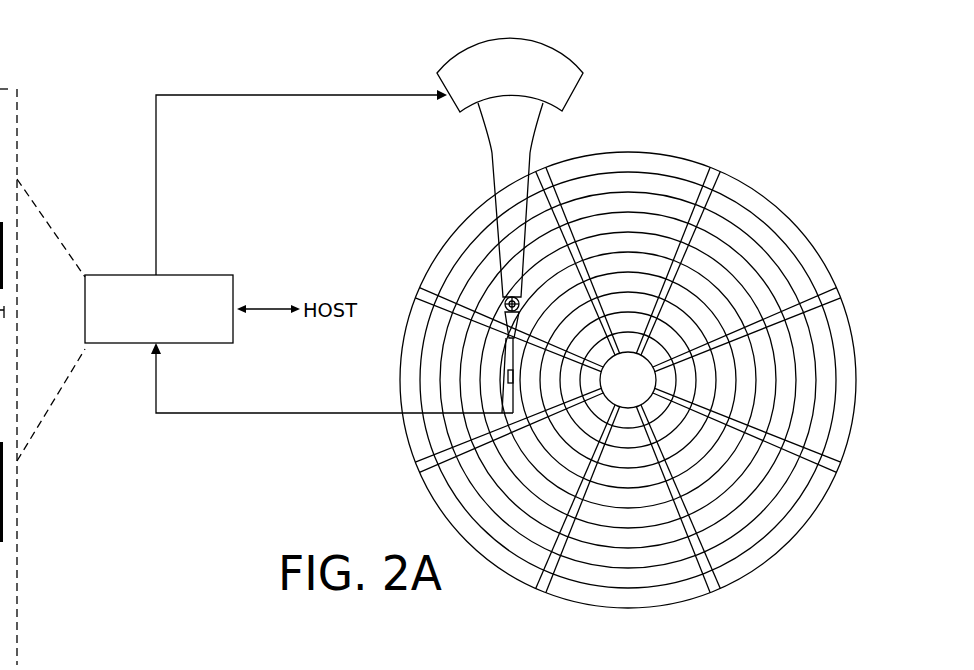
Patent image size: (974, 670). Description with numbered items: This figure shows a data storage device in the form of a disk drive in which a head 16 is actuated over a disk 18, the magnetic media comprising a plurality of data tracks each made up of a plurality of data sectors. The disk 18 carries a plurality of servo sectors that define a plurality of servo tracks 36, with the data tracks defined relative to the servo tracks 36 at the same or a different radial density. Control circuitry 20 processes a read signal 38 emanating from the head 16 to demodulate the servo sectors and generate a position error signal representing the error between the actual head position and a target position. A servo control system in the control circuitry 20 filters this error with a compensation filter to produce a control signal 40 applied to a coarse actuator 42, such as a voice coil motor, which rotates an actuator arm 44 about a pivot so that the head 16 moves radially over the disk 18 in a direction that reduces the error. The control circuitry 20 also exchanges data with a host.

The head 16 is at (500, 381).
The disk 18 is at (790, 201).
The control circuitry 20 is at (197, 275).
The servo tracks 36 is at (618, 180).
The read signal 38 is at (290, 417).
The control signal 40 is at (157, 177).
The coarse actuator 42 is at (450, 106).
The actuator arm 44 is at (491, 177).